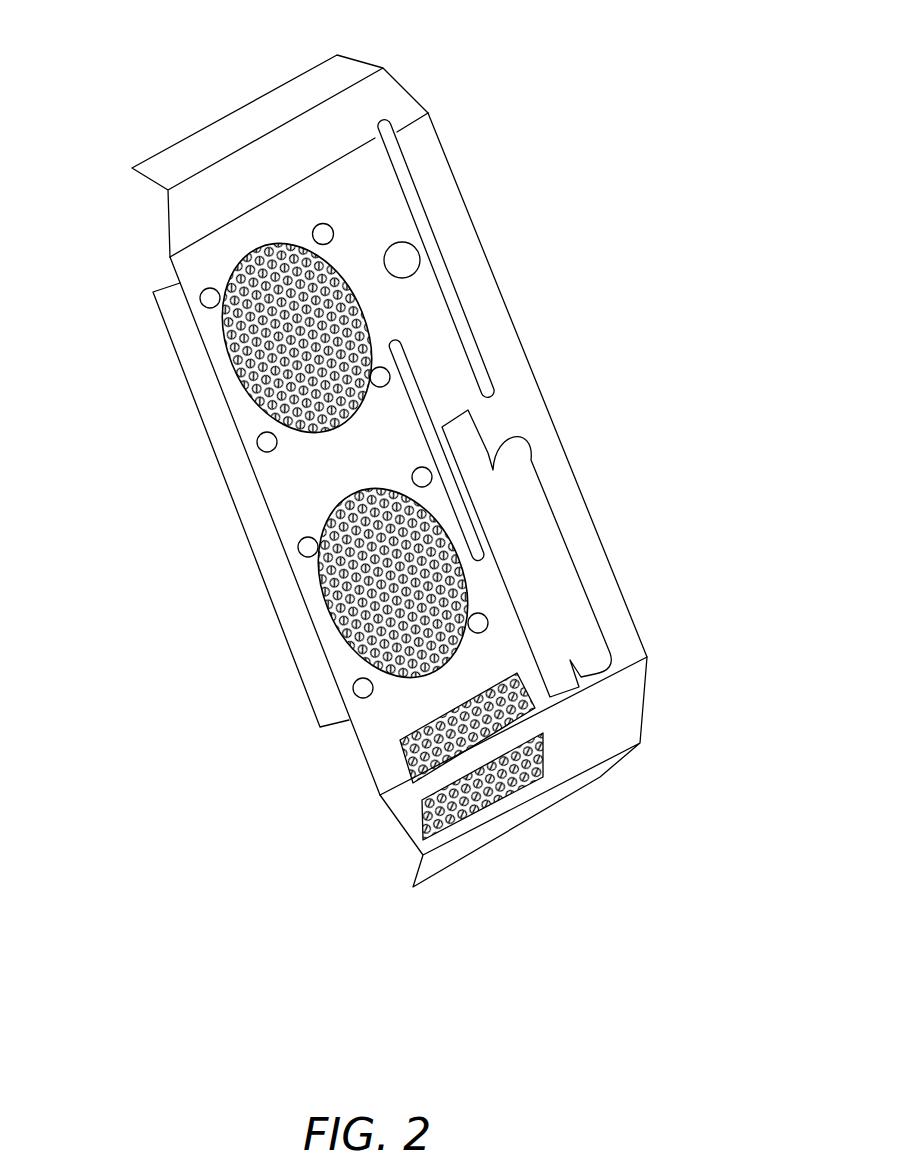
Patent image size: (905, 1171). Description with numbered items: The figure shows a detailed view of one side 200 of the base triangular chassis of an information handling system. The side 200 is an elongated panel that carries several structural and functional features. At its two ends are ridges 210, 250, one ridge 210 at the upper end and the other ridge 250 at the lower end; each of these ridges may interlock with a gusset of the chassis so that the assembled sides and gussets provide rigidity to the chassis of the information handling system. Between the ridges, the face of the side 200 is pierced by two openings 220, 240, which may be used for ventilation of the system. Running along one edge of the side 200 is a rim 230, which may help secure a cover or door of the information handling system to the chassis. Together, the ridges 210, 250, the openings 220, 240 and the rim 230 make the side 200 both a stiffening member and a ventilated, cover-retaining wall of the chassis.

The side 200 is at (668, 78).
The ridge 210 is at (173, 163).
The opening 220 is at (222, 346).
The rim 230 is at (238, 463).
The opening 240 is at (320, 593).
The ridge 250 is at (540, 808).